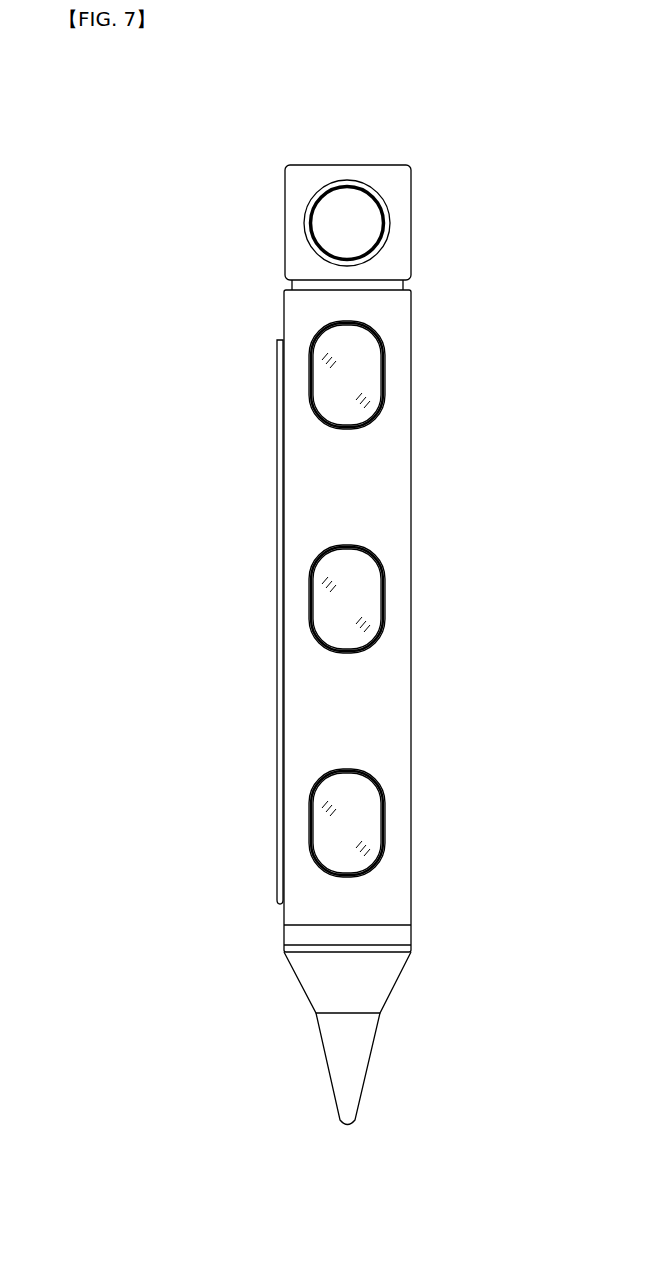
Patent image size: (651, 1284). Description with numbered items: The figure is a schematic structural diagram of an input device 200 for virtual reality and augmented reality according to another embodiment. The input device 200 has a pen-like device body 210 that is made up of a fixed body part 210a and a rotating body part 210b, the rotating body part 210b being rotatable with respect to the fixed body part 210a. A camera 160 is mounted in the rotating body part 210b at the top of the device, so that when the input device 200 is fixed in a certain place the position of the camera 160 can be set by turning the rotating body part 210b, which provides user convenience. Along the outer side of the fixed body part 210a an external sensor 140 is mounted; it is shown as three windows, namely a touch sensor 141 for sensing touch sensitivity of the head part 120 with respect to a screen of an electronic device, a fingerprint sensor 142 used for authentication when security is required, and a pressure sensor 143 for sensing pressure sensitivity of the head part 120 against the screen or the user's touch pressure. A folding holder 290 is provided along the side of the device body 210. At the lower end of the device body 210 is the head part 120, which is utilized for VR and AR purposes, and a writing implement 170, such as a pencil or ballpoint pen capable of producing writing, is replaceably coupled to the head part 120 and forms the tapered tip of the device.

The input device 200 is at (122, 150).
The device body 210 is at (160, 195).
The fixed body part 210a is at (274, 318).
The rotating body part 210b is at (274, 230).
The camera 160 is at (363, 223).
The external sensor 140 is at (500, 378).
The touch sensor 141 is at (375, 371).
The fingerprint sensor 142 is at (375, 597).
The pressure sensor 143 is at (375, 821).
The folding holder 290 is at (268, 642).
The head part 120 is at (312, 978).
The writing implement 170 is at (360, 1053).